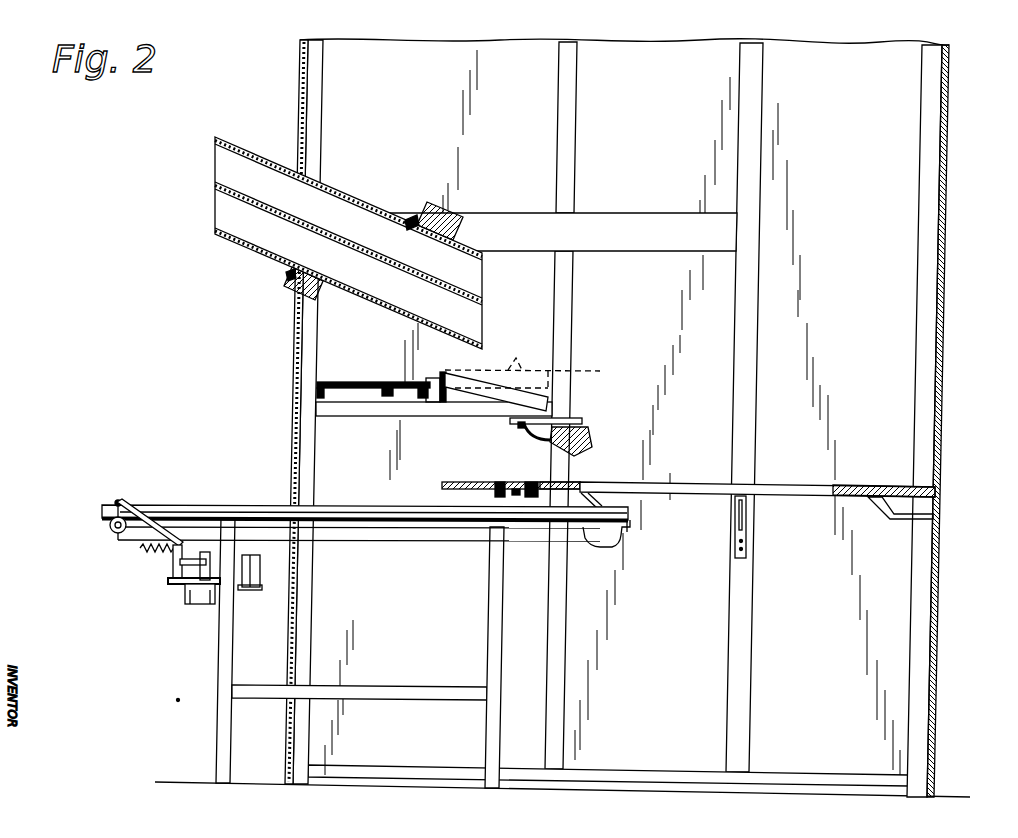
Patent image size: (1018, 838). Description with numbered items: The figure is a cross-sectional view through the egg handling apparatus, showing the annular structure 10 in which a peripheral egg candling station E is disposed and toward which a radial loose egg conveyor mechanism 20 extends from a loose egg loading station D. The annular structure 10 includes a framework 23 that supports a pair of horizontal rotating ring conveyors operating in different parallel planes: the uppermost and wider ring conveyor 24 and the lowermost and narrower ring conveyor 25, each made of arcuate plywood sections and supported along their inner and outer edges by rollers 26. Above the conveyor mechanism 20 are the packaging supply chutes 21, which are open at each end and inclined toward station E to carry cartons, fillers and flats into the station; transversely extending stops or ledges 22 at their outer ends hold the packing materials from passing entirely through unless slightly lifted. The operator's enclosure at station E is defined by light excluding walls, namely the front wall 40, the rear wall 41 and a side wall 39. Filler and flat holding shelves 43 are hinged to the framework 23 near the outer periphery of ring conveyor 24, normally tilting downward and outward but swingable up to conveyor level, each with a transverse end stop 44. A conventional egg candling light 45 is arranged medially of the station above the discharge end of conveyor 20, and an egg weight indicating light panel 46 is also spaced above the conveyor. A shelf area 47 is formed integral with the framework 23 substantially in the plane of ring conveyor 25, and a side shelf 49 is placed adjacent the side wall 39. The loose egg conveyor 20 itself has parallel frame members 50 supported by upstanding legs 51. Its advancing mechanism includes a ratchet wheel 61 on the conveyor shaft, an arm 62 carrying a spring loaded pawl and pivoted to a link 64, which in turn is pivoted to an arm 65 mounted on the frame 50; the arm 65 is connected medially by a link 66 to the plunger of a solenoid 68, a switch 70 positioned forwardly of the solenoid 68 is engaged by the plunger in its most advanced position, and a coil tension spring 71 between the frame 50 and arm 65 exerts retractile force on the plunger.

The annular structure 10 is at (293, 341).
The loose egg conveyor mechanism 20 is at (154, 616).
The packaging supply chutes 21 is at (346, 194).
The stops or ledges 22 is at (486, 332).
The framework 23 is at (316, 388).
The ring conveyor 24 is at (350, 382).
The ring conveyor 25 is at (499, 482).
The rollers 26 is at (540, 556).
The side wall 39 is at (664, 173).
The front wall 40 is at (301, 89).
The rear wall 41 is at (949, 248).
The filler and flat holding shelves 43 is at (492, 394).
The end stop 44 is at (549, 399).
The egg candling light 45 is at (587, 436).
The light panel 46 is at (601, 505).
The shelf area 47 is at (578, 481).
The side shelf 49 is at (678, 486).
The frame members 50 is at (247, 512).
The legs 51 is at (232, 728).
The ratchet wheel 61 is at (113, 541).
The arm 62 is at (109, 524).
The link 64 is at (167, 508).
The arm 65 is at (176, 558).
The link 66 is at (197, 560).
The solenoid 68 is at (243, 590).
The switch 70 is at (258, 564).
The coil tension spring 71 is at (150, 551).
The loose egg loading stations D is at (75, 526).
The egg candling stations E is at (898, 385).